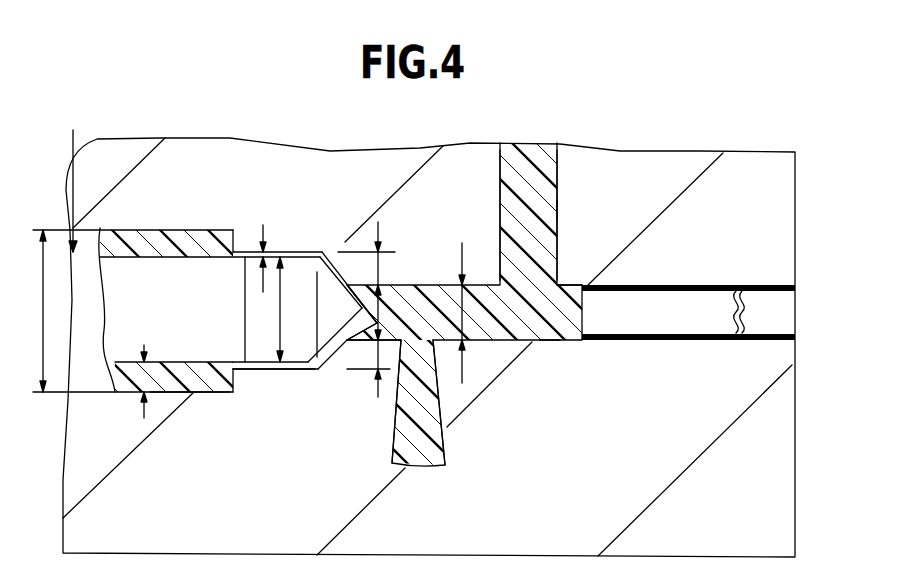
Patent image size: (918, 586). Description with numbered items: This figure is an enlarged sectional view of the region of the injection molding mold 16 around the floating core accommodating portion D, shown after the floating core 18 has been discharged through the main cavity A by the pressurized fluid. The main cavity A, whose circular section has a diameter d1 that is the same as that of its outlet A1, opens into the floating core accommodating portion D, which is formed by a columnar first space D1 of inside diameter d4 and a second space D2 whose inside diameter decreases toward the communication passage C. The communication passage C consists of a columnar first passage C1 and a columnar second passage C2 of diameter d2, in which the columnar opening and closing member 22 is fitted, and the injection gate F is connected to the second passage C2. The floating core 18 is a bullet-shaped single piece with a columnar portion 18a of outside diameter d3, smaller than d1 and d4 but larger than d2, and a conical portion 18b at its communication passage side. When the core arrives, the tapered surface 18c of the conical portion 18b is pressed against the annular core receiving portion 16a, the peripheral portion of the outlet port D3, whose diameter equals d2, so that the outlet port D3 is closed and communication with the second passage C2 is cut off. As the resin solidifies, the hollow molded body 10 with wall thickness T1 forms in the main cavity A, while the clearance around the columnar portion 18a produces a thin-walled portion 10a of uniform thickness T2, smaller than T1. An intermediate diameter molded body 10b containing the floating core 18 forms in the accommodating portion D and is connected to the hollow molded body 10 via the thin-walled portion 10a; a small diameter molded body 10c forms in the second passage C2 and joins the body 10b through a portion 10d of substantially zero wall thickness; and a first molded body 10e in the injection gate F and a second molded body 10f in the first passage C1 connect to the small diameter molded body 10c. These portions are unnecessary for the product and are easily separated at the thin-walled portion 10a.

The hollow molded body 10 is at (158, 394).
The thin-walled portion 10a is at (238, 372).
The intermediate diameter molded body 10b is at (333, 352).
The small diameter molded body 10c is at (418, 283).
The portion having a wall thickness of substantially zero 10d is at (350, 268).
The first molded body 10e is at (423, 393).
The second molded body 10f is at (527, 192).
The injection molding mold 16 is at (665, 167).
The core receiving portion 16a is at (378, 397).
The floating core 18 is at (236, 313).
The columnar portion 18a is at (258, 332).
The conical portion 18b is at (317, 357).
The tapered surface 18c is at (348, 287).
The opening and closing member 22 is at (676, 341).
The main cavity A is at (72, 181).
The outlet A1 is at (220, 382).
The communication passage C is at (562, 297).
The first passage C1 is at (545, 210).
The second passage C2 is at (545, 328).
The floating core accommodating portion D is at (243, 288).
The first space D1 is at (292, 262).
The second space D2 is at (348, 346).
The outlet port D3 is at (317, 272).
The injection gate F is at (440, 378).
The wall thickness of the hollow molded body T1 is at (138, 392).
The wall thickness of the thin-walled portion T2 is at (260, 250).
The diameter of the main cavity d1 is at (54, 311).
The diameter of the second passage d2 is at (472, 287).
The outside diameter of the columnar portion d3 is at (269, 309).
The inside diameter of the first space d4 is at (386, 253).